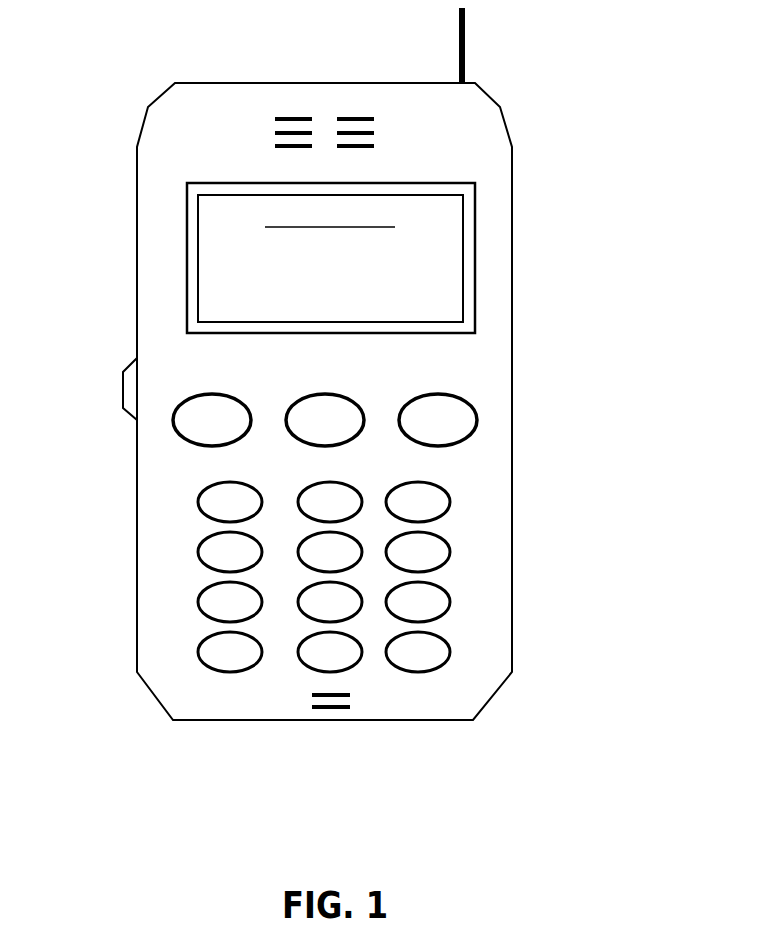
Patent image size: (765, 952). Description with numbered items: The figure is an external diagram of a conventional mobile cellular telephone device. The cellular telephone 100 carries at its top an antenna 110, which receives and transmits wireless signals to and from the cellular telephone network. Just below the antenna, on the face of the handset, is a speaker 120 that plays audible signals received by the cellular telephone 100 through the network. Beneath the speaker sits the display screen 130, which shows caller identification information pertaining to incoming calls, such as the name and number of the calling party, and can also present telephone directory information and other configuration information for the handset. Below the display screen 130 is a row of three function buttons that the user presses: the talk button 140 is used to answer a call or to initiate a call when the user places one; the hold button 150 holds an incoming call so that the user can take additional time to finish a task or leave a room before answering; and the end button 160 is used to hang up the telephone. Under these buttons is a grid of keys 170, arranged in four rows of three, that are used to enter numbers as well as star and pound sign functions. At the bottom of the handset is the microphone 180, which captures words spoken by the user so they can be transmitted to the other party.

The cellular telephone 100 is at (90, 110).
The antenna 110 is at (459, 45).
The speaker 120 is at (277, 118).
The display screen 130 is at (187, 258).
The talk button 140 is at (212, 393).
The hold button 150 is at (325, 393).
The end button 160 is at (438, 393).
The keys 170 is at (450, 545).
The microphone 180 is at (337, 709).